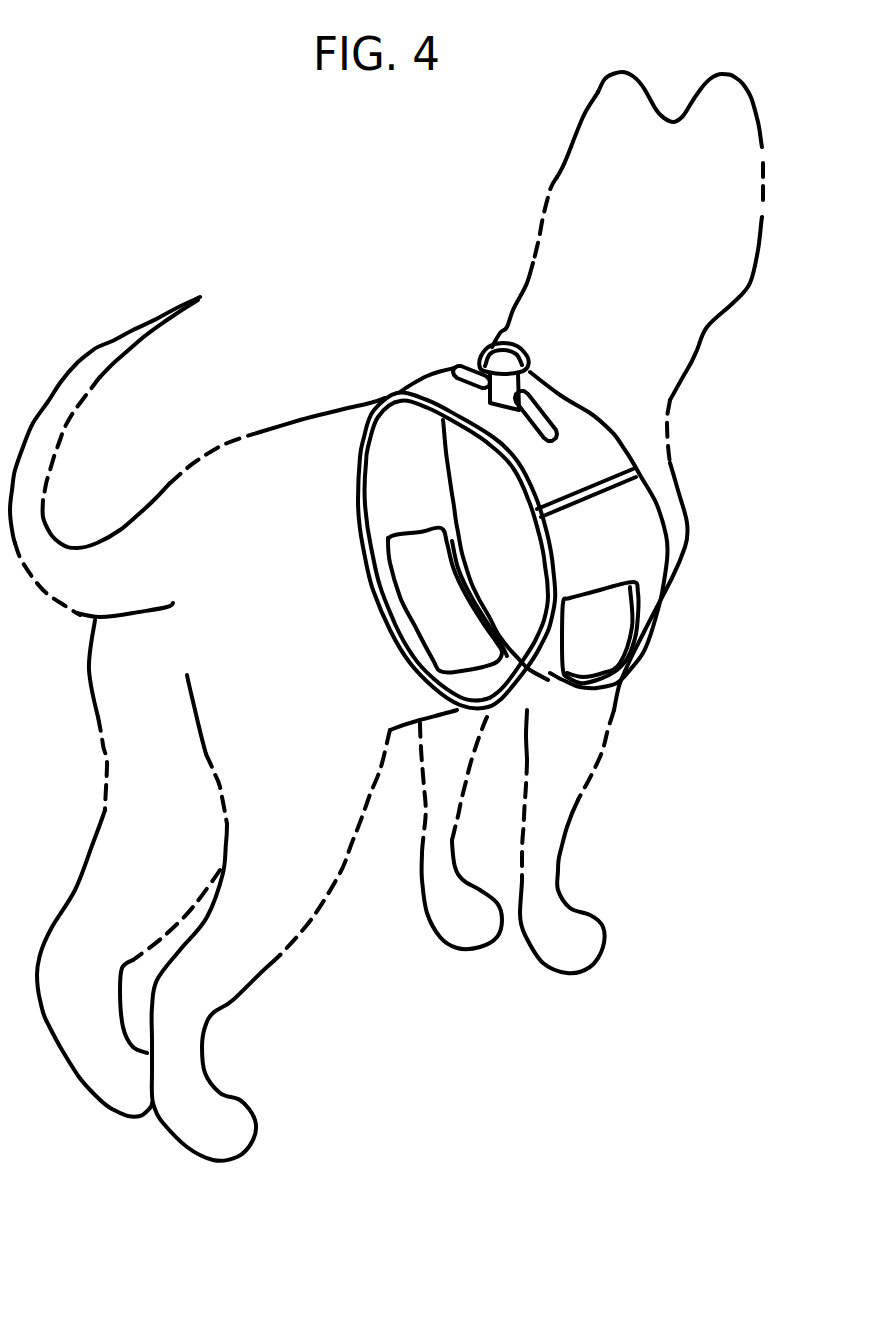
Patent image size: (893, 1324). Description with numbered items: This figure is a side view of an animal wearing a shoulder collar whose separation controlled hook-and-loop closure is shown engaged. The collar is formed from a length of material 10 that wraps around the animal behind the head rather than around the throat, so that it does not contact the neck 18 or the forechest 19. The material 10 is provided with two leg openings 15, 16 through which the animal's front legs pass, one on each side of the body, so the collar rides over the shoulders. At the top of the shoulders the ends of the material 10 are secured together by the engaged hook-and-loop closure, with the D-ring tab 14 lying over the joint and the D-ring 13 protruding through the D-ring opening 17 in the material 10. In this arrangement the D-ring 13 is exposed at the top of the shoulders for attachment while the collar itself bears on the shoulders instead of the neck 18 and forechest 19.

The length of material 10 is at (352, 467).
The D-ring 13 is at (480, 346).
The D-ring tab 14 is at (521, 379).
The leg opening 15 is at (420, 587).
The leg opening 16 is at (597, 650).
The D-ring opening 17 is at (455, 370).
The neck 18 is at (697, 356).
The forechest 19 is at (680, 517).